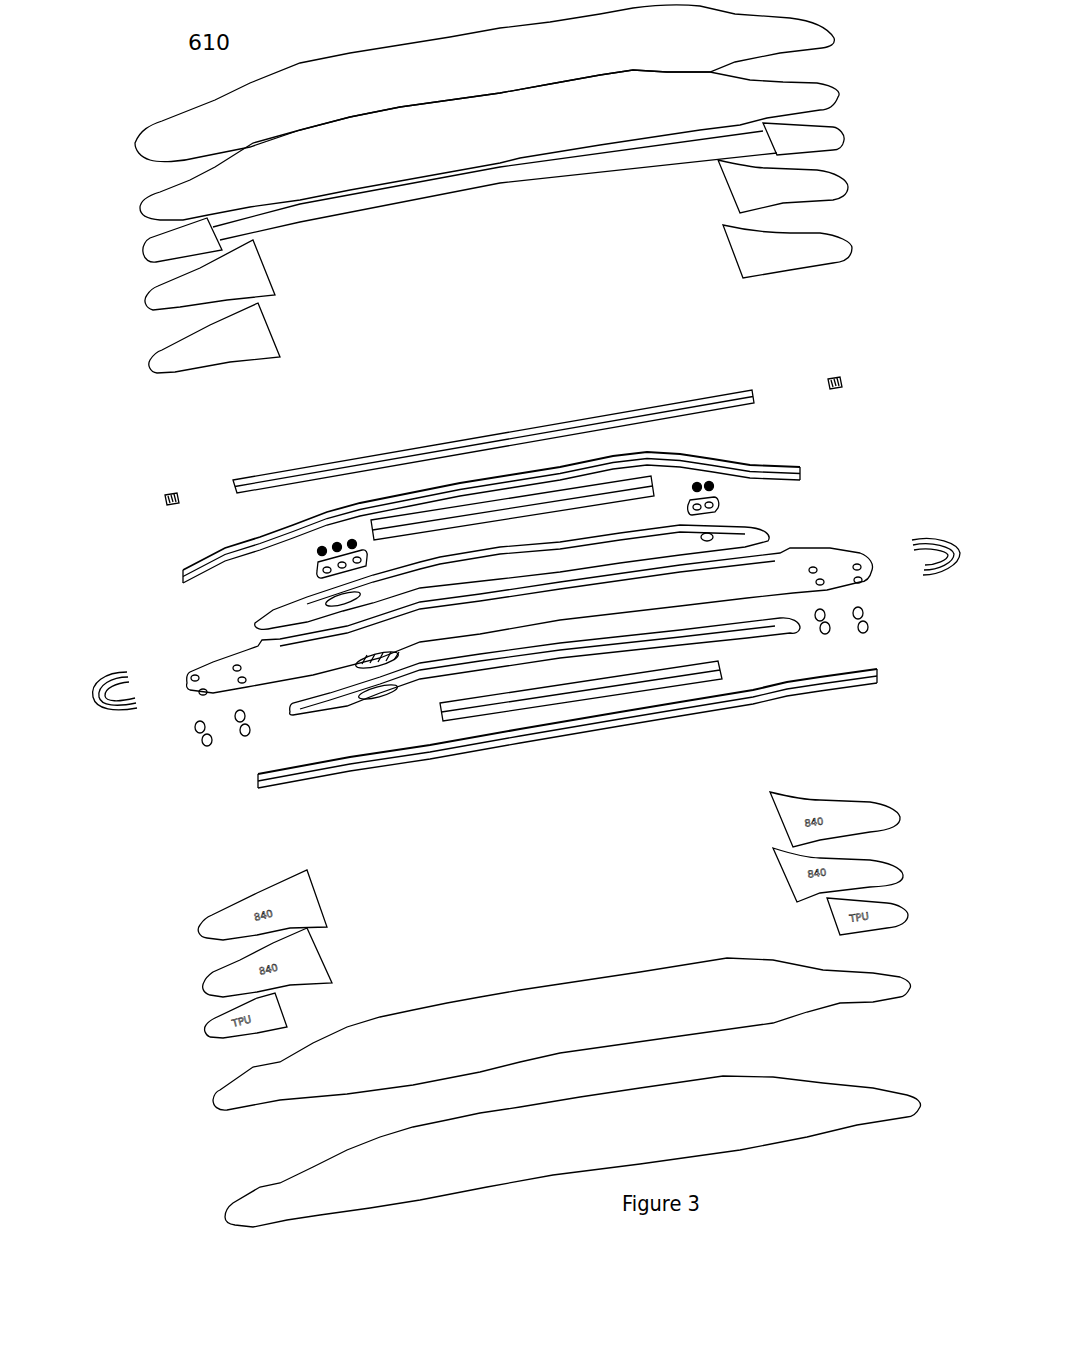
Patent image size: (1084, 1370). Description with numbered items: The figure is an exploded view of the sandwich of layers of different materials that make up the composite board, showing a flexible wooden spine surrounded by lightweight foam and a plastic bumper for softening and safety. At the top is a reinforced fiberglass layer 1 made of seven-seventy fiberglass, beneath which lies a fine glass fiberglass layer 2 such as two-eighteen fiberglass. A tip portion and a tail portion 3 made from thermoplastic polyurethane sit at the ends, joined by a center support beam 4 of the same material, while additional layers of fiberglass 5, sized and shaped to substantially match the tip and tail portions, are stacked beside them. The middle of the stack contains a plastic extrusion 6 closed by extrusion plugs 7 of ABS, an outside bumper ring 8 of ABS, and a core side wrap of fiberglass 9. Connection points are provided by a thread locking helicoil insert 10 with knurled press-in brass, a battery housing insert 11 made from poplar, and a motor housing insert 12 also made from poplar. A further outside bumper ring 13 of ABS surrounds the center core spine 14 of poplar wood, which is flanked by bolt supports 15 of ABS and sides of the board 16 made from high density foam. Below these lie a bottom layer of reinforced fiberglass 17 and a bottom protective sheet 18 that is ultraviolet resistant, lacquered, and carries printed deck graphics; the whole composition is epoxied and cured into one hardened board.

The reinforced fiberglass layer 1 is at (133, 138).
The fine glass fiberglass layer 2 is at (138, 208).
The tip portion and tail portion 3 is at (140, 250).
The center support beam 4 is at (212, 243).
The additional layers of fiberglass 5 is at (148, 296).
The plastic extrusion 6 is at (232, 481).
The extrusion plugs 7 is at (162, 499).
The outside bumper ring 8 is at (180, 575).
The core side wrap of fiberglass 9 is at (404, 540).
The thread locking helicoil insert 10 is at (318, 553).
The battery housing insert 11 is at (313, 570).
The motor housing insert 12 is at (724, 507).
The outside bumper ring 13 is at (100, 694).
The center core spine 14 is at (187, 694).
The bolt supports 15 is at (196, 729).
The sides of the board 16 is at (290, 718).
The bottom layer of reinforced fiberglass 17 is at (214, 1096).
The bottom protective sheet 18 is at (222, 1207).